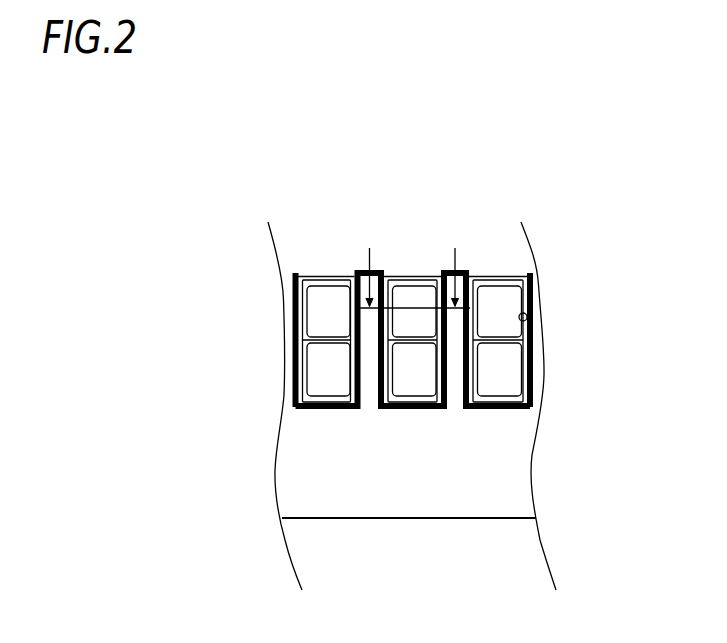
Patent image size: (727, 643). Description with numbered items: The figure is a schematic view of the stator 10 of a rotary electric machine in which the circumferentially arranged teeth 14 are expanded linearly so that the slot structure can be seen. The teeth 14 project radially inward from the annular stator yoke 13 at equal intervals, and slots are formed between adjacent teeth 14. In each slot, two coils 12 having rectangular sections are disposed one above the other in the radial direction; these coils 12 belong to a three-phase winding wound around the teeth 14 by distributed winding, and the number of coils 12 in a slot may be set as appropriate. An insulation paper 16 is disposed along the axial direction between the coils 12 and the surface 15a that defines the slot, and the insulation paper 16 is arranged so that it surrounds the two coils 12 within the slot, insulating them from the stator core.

The stator 10 is at (331, 196).
The coil 12 is at (316, 328).
The stator yoke 13 is at (415, 504).
The teeth 14 is at (290, 272).
The surface defining the slots 15a is at (473, 373).
The insulation paper 16 is at (498, 273).